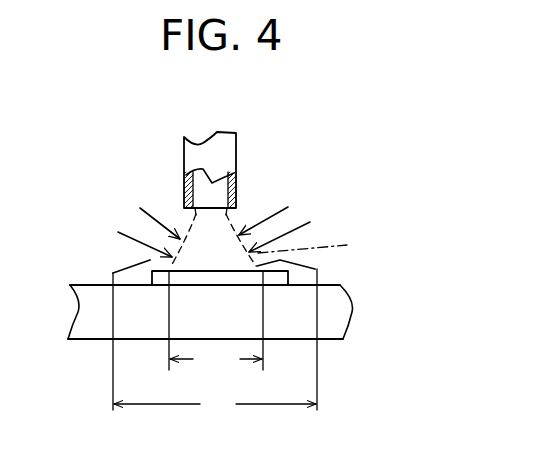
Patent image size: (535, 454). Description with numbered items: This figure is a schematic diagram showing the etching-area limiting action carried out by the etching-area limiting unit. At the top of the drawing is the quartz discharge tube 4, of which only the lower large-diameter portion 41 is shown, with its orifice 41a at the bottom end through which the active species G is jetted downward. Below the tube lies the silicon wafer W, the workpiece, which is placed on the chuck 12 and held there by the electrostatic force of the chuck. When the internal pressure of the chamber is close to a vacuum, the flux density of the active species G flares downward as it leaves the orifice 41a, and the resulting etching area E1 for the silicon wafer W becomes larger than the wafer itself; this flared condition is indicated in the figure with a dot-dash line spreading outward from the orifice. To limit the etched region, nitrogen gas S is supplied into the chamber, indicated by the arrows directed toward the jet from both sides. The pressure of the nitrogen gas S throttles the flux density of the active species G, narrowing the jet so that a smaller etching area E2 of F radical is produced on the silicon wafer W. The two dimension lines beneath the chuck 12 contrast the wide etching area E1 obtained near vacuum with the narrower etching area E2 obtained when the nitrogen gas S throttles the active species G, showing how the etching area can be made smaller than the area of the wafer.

The quartz discharge tube 4 is at (264, 134).
The large-diameter portion 41 is at (236, 152).
The orifice 41a is at (216, 211).
The nitrogen gas S is at (215, 224).
The active species G is at (315, 249).
The silicon wafer W is at (99, 277).
The chuck 12 is at (351, 307).
The etching area E1 is at (215, 345).
The etching area E2 is at (216, 323).